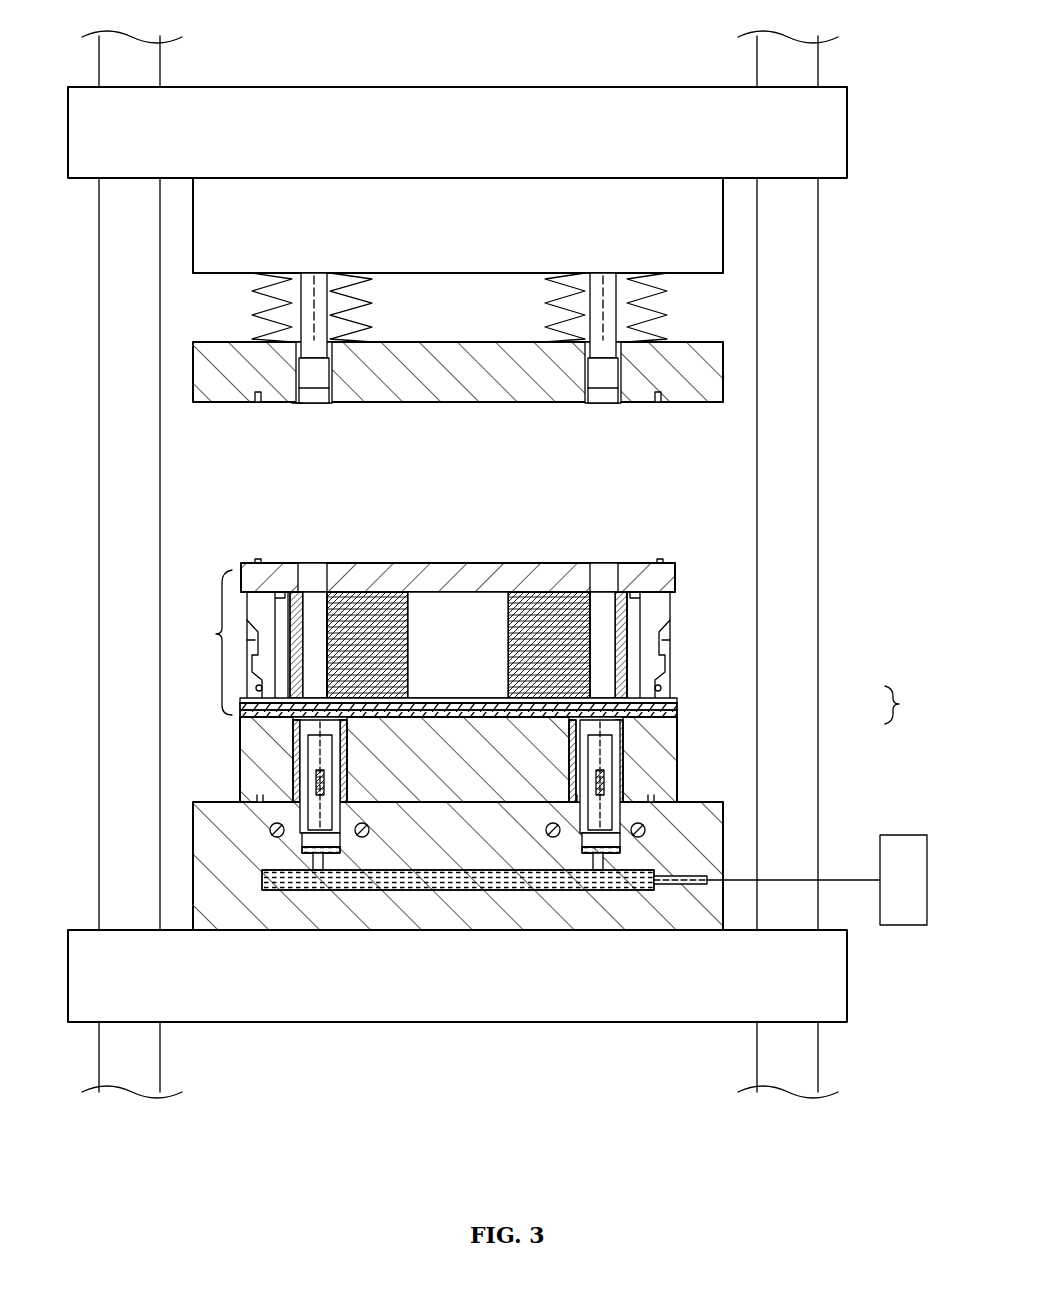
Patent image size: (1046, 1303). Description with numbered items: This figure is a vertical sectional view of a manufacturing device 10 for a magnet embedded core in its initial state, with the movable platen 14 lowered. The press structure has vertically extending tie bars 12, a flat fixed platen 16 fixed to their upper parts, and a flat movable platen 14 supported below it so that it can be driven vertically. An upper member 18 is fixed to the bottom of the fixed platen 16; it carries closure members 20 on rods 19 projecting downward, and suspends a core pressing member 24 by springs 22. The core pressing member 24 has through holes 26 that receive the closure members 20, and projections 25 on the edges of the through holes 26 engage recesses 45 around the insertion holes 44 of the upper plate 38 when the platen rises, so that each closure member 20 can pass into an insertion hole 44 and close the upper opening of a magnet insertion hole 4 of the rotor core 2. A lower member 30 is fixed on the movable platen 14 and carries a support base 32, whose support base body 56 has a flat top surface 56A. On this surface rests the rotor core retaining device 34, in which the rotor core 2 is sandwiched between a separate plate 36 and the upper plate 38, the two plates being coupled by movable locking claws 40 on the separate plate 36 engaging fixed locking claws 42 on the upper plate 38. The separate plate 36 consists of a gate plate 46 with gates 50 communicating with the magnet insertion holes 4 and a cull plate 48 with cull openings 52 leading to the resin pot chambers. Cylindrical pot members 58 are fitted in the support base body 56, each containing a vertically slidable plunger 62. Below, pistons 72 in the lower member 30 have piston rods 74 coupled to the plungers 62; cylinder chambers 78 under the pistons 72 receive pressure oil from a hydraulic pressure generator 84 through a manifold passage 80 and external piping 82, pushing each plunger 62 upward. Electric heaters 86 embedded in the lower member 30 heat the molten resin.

The rotor core 2 is at (542, 605).
The magnet insertion hole 4 is at (288, 620).
The manufacturing device 10 is at (822, 318).
The tie bar 12 is at (818, 452).
The movable platen 14 is at (455, 1010).
The fixed platen 16 is at (565, 98).
The upper member 18 is at (703, 223).
The rod 19 is at (317, 322).
The closure member 20 is at (314, 378).
The spring 22 is at (252, 312).
The core pressing member 24 is at (710, 374).
The projection 25 is at (300, 403).
The through hole 26 is at (330, 372).
The lower member 30 is at (706, 830).
The support base 32 is at (670, 742).
The rotor core retaining device 34 is at (203, 642).
The separate plate 36 is at (909, 705).
The upper plate 38 is at (675, 574).
The movable locking claw 40 is at (662, 668).
The fixed locking claw 42 is at (662, 613).
The insertion hole 44 is at (296, 618).
The recess 45 is at (328, 577).
The gate plate 46 is at (676, 701).
The cull plate 48 is at (676, 712).
The gate 50 is at (302, 710).
The cull opening 52 is at (300, 732).
The support base body 56 is at (666, 760).
The top surface 56A is at (454, 705).
The pot member 58 is at (293, 762).
The plunger 62 is at (330, 742).
The piston 72 is at (302, 840).
The piston rod 74 is at (325, 800).
The cylinder chamber 78 is at (318, 865).
The manifold passage 80 is at (500, 885).
The external piping 82 is at (854, 881).
The hydraulic pressure generator 84 is at (920, 891).
The electric heater 86 is at (369, 830).